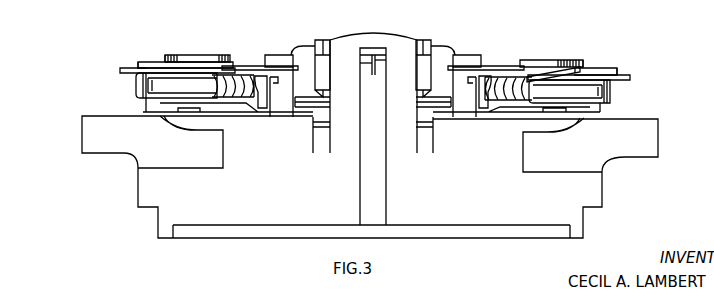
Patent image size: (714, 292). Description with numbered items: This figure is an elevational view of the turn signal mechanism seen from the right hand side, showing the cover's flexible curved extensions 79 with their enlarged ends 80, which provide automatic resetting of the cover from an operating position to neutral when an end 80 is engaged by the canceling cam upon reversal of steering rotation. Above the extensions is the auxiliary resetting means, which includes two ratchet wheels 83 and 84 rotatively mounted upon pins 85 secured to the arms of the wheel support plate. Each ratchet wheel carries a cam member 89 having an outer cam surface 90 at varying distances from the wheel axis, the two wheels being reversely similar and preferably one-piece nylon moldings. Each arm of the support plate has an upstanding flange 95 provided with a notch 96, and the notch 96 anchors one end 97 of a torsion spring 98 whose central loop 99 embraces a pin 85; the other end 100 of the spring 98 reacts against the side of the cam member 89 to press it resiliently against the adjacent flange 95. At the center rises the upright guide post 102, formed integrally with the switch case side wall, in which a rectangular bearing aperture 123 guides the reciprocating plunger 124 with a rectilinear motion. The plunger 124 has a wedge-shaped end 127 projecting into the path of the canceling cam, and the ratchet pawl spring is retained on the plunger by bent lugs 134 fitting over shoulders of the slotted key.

The flexible curved extension 79 is at (82, 134).
The enlarged end 80 is at (209, 158).
The ratchet wheel 83 is at (135, 82).
The ratchet wheel 84 is at (613, 93).
The pin 85 is at (217, 56).
The cam member 89 is at (143, 62).
The outer cam surface 90 is at (137, 65).
The upstanding flange 95 is at (287, 48).
The notch 96 is at (373, 92).
The end of torsion spring 97 is at (263, 56).
The torsion spring 98 is at (244, 66).
The central loop 99 is at (165, 60).
The other end of spring 100 is at (121, 68).
The upright guide post 102 is at (403, 47).
The rectangular bearing aperture 123 is at (368, 47).
The plunger 124 is at (380, 63).
The wedge-shaped end 127 is at (368, 63).
The bent lug 134 is at (325, 37).